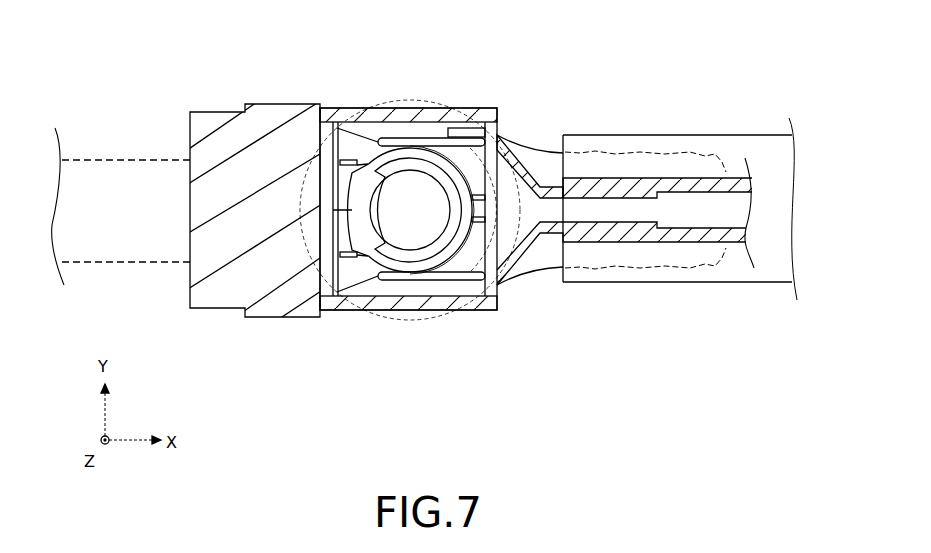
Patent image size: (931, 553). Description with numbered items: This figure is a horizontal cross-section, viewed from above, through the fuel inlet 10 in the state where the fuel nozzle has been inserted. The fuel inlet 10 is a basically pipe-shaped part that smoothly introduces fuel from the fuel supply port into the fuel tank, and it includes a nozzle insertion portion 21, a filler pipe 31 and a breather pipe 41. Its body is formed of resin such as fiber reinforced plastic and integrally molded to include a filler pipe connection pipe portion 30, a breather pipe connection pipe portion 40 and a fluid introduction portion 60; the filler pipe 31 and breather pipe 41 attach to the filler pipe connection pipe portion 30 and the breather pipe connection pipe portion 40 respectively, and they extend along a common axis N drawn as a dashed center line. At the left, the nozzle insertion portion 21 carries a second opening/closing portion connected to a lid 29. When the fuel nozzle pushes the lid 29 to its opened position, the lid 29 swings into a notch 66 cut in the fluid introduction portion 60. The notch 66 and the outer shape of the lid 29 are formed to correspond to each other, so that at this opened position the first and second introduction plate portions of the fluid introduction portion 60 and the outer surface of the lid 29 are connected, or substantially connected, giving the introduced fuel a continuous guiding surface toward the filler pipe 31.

The axis line N is at (140, 200).
The fuel inlet 10 is at (758, 83).
The nozzle insertion portion 21 is at (263, 320).
The lid 29 is at (415, 156).
The filler pipe connection pipe portion 30 is at (671, 243).
The filler pipe 31 is at (741, 270).
The breather pipe connection pipe portion 40 is at (613, 186).
The breather pipe 41 is at (705, 178).
The fluid introduction portion 60 is at (348, 108).
The notch 66 is at (485, 108).